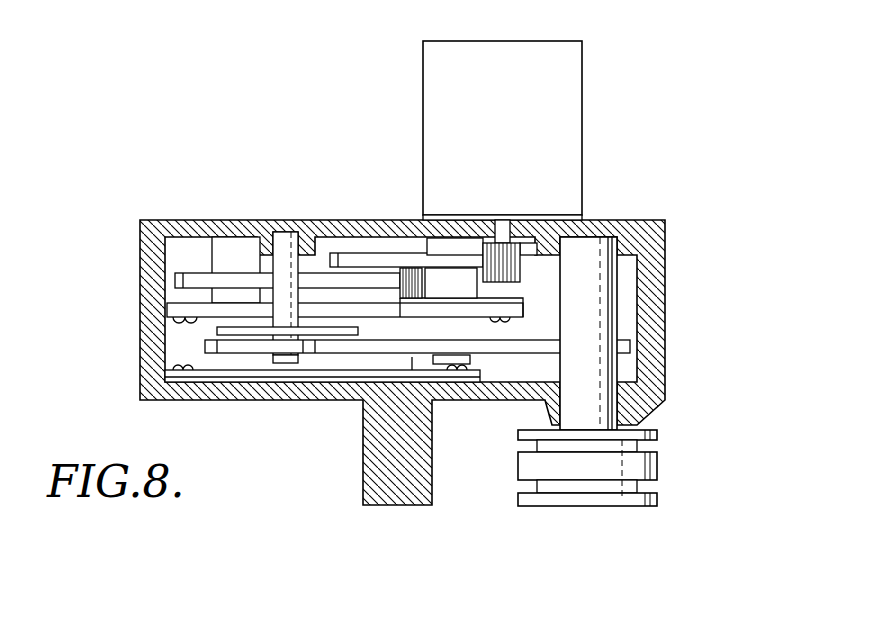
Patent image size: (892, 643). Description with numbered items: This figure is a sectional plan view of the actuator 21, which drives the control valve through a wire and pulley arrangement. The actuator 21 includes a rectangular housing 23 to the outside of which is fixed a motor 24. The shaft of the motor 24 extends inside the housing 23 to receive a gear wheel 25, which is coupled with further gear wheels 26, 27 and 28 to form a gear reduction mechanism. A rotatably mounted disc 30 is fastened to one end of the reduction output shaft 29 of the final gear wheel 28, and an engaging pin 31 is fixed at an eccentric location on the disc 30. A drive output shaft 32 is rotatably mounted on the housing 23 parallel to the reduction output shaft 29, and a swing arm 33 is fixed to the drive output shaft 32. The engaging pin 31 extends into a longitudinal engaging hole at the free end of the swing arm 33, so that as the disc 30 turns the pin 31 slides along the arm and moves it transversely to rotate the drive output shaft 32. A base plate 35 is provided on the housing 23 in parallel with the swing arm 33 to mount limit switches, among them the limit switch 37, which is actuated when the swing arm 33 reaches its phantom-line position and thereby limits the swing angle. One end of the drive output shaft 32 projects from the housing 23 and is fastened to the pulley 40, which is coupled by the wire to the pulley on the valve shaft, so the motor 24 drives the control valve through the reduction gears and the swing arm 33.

The actuator 21 is at (193, 184).
The rectangular housing 23 is at (157, 218).
The motor 24 is at (582, 115).
The gear wheel 25 is at (525, 268).
The gear wheel 26 is at (357, 253).
The gear wheel 27 is at (425, 283).
The final gear wheel 28 is at (237, 268).
The reduction output shaft 29 is at (291, 232).
The rotatable disc 30 is at (217, 329).
The engaging pin 31 is at (287, 364).
The drive output shaft 32 is at (598, 255).
The swing arm 33 is at (510, 348).
The base plate 35 is at (218, 370).
The limit switch 37 is at (412, 358).
The pulley 40 is at (640, 472).